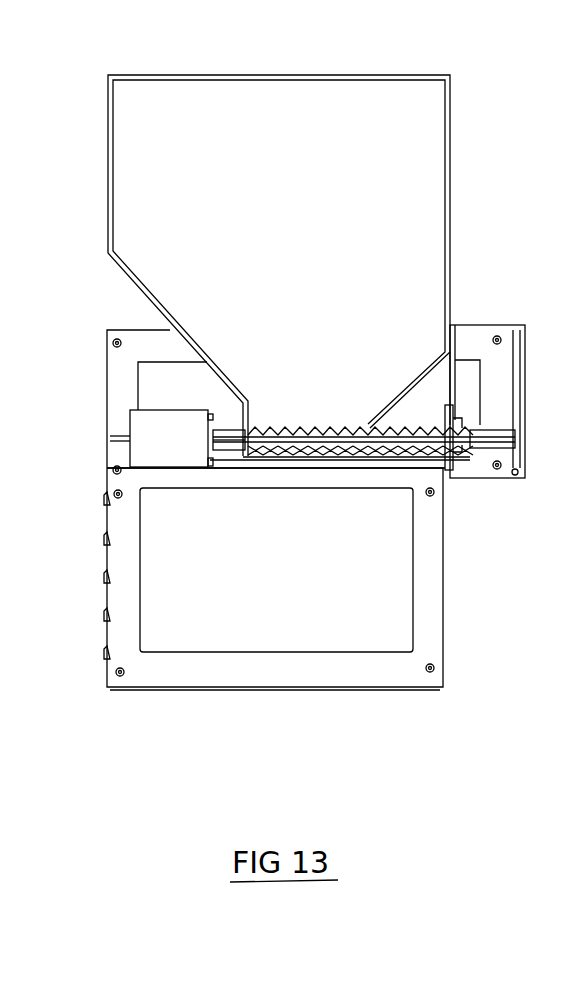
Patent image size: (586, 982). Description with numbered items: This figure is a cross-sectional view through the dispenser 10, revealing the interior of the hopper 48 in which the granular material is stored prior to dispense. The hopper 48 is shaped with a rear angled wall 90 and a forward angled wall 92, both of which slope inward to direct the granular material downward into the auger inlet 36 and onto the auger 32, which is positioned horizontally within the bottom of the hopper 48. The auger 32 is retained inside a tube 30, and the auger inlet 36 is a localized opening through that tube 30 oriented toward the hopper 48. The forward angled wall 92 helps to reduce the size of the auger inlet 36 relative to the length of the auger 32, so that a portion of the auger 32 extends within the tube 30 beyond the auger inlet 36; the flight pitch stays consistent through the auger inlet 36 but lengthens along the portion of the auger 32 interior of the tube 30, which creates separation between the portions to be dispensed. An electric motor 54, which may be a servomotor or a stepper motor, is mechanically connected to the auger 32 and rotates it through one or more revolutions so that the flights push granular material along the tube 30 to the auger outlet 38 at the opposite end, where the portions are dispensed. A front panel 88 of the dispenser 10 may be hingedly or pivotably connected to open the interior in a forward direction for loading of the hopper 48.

The dispenser 10 is at (500, 124).
The hopper 48 is at (418, 76).
The tube 30 is at (382, 458).
The auger 32 is at (325, 455).
The auger inlet 36 is at (311, 420).
The electric motor 54 is at (178, 452).
The rear angled wall 90 is at (186, 334).
The forward angled wall 92 is at (423, 373).
The front panel 88 is at (526, 396).
The auger outlet 38 is at (488, 455).